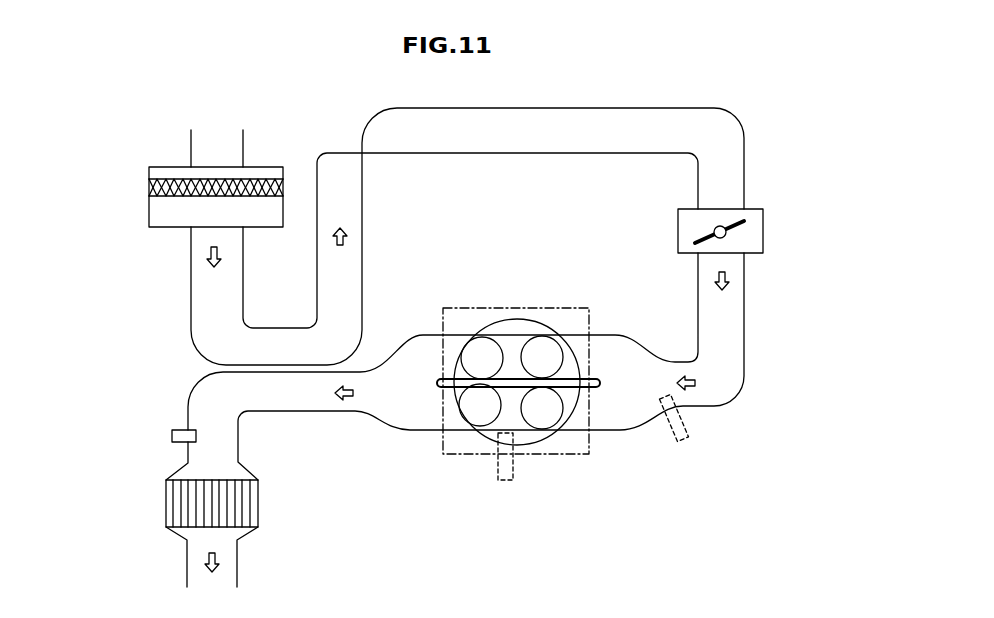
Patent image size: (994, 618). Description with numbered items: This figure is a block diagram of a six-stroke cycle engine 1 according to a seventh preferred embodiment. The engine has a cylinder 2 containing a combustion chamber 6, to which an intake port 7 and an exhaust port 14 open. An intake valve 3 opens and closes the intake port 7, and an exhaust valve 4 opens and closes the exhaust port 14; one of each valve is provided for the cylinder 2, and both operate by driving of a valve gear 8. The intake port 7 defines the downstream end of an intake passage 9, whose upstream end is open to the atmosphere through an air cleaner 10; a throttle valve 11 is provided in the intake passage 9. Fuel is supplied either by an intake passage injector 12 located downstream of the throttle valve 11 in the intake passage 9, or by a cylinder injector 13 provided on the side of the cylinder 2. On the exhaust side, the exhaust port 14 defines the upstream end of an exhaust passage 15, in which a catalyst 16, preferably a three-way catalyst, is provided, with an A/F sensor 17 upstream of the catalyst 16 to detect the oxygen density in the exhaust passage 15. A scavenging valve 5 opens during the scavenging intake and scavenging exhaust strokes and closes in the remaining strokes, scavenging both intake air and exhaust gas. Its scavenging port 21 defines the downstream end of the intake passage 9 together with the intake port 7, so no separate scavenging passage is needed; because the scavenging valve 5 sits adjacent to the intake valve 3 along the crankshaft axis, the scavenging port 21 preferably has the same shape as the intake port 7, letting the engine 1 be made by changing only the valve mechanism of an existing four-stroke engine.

The six-stroke cycle engine 1 is at (100, 127).
The cylinder 2 is at (478, 362).
The intake valve 3 is at (540, 413).
The exhaust valve 4 is at (473, 405).
The scavenging valve 5 is at (539, 350).
The combustion chamber 6 is at (550, 575).
The intake port 7 is at (577, 420).
The valve gear 8 is at (483, 455).
The intake passage 9 is at (723, 173).
The air cleaner 10 is at (149, 197).
The throttle valve 11 is at (735, 228).
The intake passage injector 12 is at (686, 440).
The cylinder injector 13 is at (503, 480).
The exhaust port 14 is at (447, 355).
The exhaust passage 15 is at (289, 396).
The catalyst 16 is at (182, 502).
The A/F sensor 17 is at (172, 436).
The scavenging port 21 is at (579, 345).